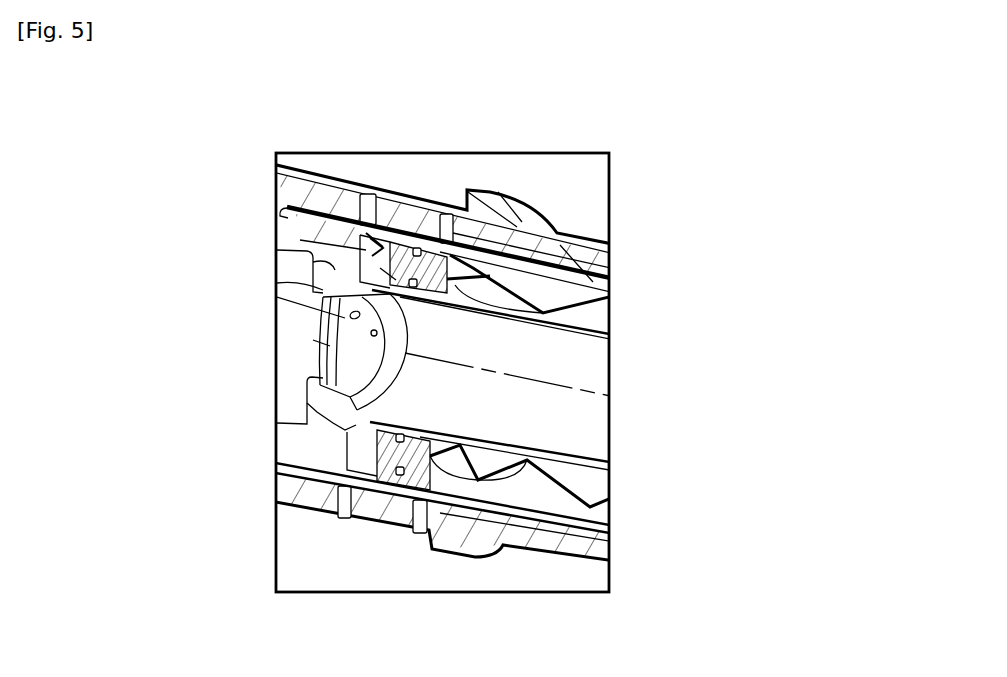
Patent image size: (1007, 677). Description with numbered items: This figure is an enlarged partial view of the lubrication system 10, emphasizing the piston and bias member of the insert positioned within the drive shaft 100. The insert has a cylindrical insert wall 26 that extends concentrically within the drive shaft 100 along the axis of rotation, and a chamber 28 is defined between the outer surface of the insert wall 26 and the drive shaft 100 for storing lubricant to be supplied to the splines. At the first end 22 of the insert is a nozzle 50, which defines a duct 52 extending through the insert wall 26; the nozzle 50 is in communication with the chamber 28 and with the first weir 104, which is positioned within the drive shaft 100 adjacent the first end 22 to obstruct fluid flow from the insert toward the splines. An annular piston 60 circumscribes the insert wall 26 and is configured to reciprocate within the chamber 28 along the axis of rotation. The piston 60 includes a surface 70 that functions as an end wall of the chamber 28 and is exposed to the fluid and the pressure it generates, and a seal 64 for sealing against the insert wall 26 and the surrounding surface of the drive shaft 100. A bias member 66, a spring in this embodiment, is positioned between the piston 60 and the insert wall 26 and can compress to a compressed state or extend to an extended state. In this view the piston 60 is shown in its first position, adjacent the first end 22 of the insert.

The system 10 is at (658, 172).
The drive shaft 100 is at (463, 176).
The first end 22 is at (397, 212).
The chamber 28 is at (354, 455).
The seal 64 is at (441, 240).
The bias member 66 is at (567, 300).
The insert wall 26 is at (563, 474).
The surface 70 is at (383, 274).
The piston 60 is at (330, 305).
The first weir 104 is at (330, 346).
The nozzle 50 is at (338, 405).
The duct 52 is at (374, 386).